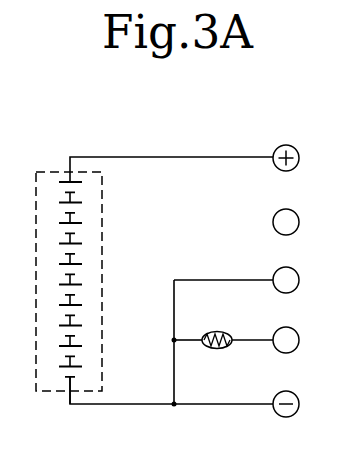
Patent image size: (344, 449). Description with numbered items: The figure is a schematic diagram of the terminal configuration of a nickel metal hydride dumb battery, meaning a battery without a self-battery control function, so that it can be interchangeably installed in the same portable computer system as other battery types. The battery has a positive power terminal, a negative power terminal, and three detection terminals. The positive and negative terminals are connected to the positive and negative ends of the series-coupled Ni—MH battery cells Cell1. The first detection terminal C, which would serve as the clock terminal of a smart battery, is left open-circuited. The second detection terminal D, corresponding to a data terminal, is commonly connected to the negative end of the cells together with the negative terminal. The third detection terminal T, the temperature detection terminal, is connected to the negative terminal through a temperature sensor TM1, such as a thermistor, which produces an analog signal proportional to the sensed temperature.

The Ni—MH battery cells Cell1 is at (103, 193).
The temperature sensor TM1 is at (219, 358).
The first detection terminal C is at (286, 222).
The second detection terminal D is at (286, 280).
The third detection terminal T is at (286, 340).